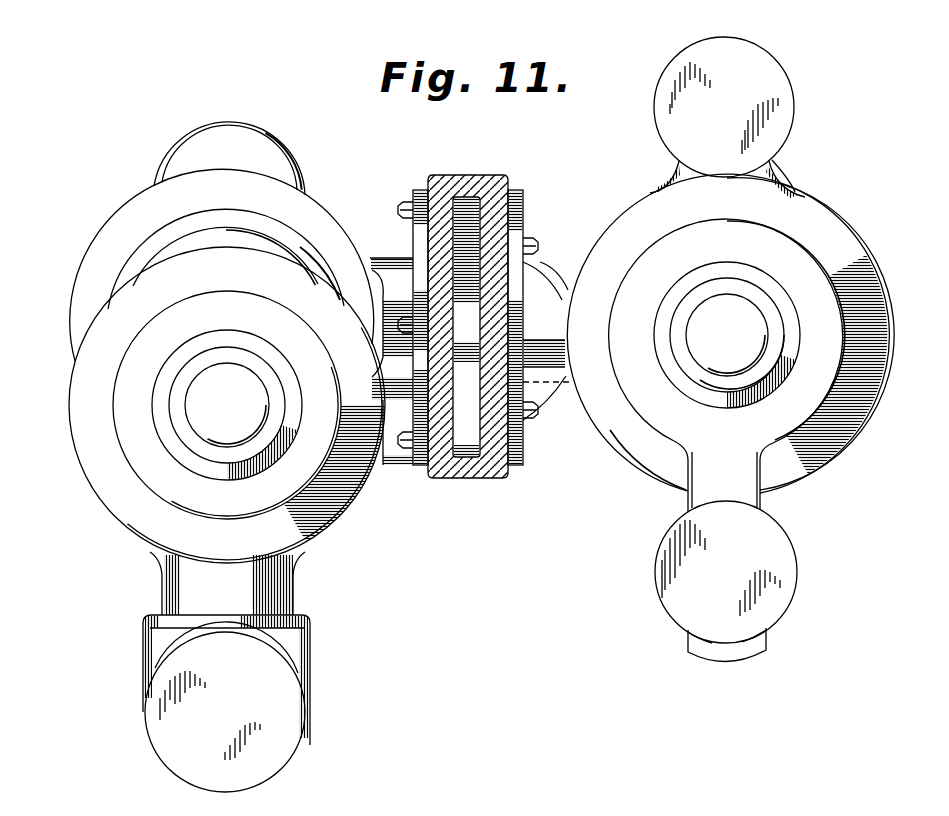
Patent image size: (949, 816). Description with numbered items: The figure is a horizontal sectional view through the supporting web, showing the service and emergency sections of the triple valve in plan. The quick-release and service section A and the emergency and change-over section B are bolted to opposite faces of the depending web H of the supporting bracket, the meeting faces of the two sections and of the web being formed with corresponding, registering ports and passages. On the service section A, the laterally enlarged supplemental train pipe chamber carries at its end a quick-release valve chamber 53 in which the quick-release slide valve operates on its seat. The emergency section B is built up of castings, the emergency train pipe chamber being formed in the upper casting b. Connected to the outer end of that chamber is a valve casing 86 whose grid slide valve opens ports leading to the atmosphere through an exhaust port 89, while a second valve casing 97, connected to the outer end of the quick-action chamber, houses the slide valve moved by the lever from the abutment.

The quick-release and service section A is at (82, 366).
The emergency and change-over section B is at (870, 327).
The depending web H is at (462, 180).
The upper casting b is at (807, 273).
The quick-release valve chamber 53 is at (168, 700).
The valve casing 86 is at (662, 548).
The exhaust port 89 is at (762, 640).
The valve casing 97 is at (677, 65).